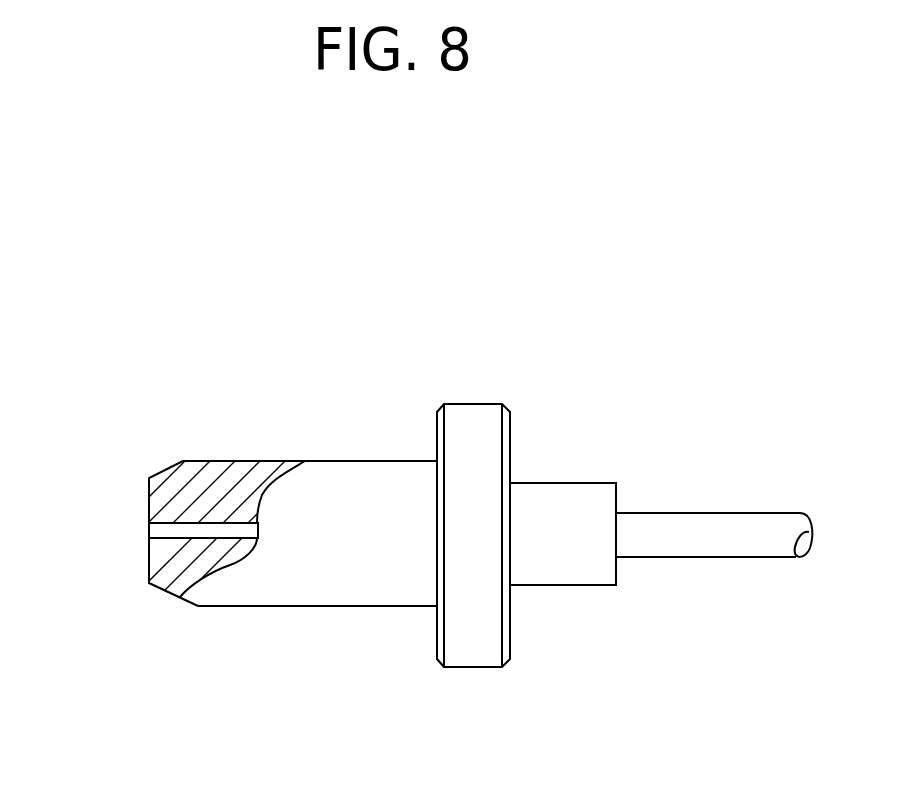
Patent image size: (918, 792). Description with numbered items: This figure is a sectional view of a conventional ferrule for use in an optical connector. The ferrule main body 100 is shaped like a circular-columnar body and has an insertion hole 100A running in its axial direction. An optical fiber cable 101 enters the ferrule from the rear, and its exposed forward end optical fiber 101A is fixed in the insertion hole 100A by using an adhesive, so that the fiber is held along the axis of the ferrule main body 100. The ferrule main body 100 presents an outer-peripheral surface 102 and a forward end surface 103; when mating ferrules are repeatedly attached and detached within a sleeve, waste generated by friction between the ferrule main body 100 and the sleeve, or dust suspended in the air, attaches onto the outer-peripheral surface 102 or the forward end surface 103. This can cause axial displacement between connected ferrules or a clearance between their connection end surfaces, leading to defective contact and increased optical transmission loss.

The ferrule main body 100 is at (376, 461).
The insertion hole 100A is at (186, 519).
The optical fiber cable 101 is at (708, 533).
The forward end optical fiber 101A is at (230, 530).
The outer-peripheral surface 102 is at (372, 607).
The forward end surface 103 is at (148, 491).